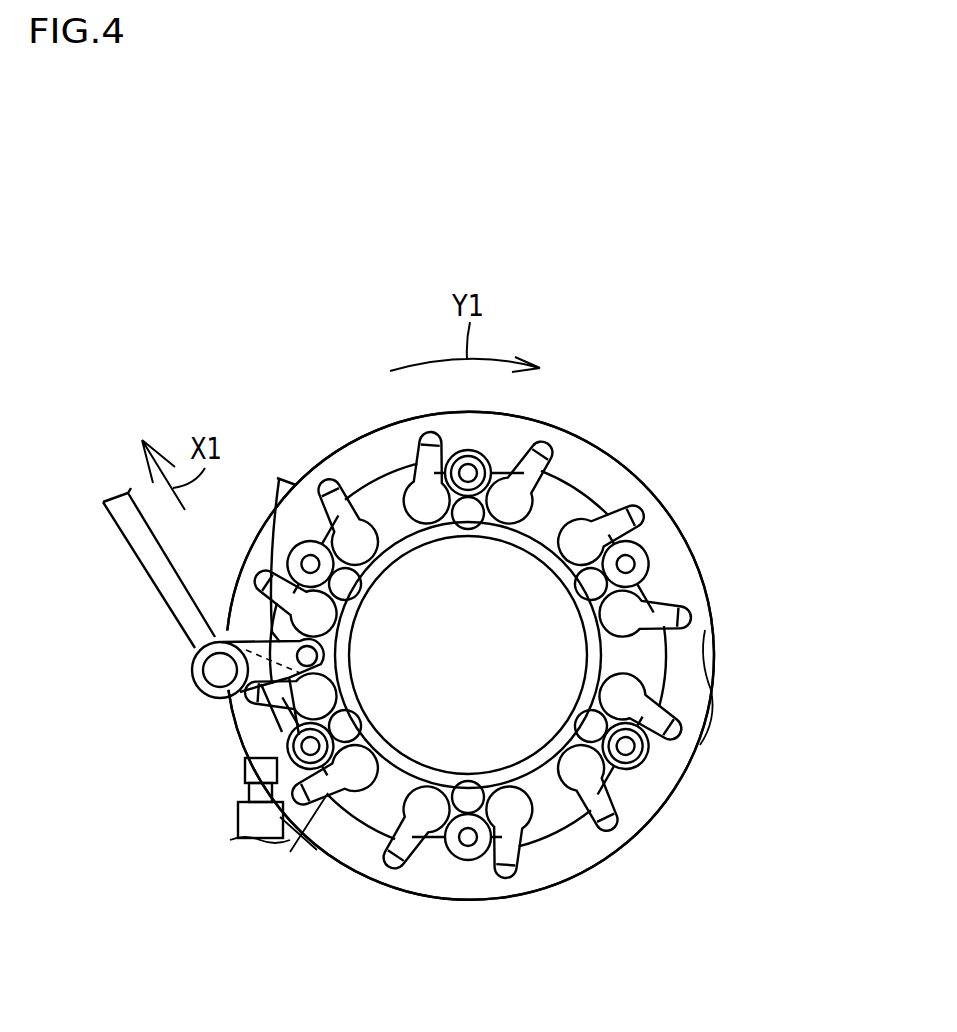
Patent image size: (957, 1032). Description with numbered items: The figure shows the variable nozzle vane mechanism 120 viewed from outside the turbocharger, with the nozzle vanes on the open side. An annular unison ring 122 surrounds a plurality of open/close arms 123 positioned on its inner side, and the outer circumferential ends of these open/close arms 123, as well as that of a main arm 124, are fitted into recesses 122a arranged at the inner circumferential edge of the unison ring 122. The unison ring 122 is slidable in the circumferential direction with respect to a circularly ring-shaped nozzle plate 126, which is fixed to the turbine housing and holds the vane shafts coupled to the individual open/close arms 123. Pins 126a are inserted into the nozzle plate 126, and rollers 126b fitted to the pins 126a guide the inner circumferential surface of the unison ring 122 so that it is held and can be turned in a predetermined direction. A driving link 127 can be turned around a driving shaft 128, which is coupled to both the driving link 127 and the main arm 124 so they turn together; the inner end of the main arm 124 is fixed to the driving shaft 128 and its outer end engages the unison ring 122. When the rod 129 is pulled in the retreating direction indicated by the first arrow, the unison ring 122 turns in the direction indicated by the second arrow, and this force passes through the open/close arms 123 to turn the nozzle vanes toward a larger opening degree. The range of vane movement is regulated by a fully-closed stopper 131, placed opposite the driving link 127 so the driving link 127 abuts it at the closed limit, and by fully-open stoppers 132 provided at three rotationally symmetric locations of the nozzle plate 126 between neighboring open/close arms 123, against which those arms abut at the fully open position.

The variable nozzle vane mechanism 120 is at (707, 329).
The unison ring 122 is at (585, 458).
The recesses 122a is at (423, 437).
The open/close arms 123 is at (620, 522).
The main arm 124 is at (250, 636).
The nozzle plate 126 is at (372, 810).
The pins 126a is at (632, 562).
The rollers 126b is at (648, 576).
The driving link 127 is at (198, 674).
The driving shaft 128 is at (240, 711).
The rod 129 is at (147, 545).
The fully-closed stopper 131 is at (250, 750).
The fully-open stoppers 132 is at (482, 512).